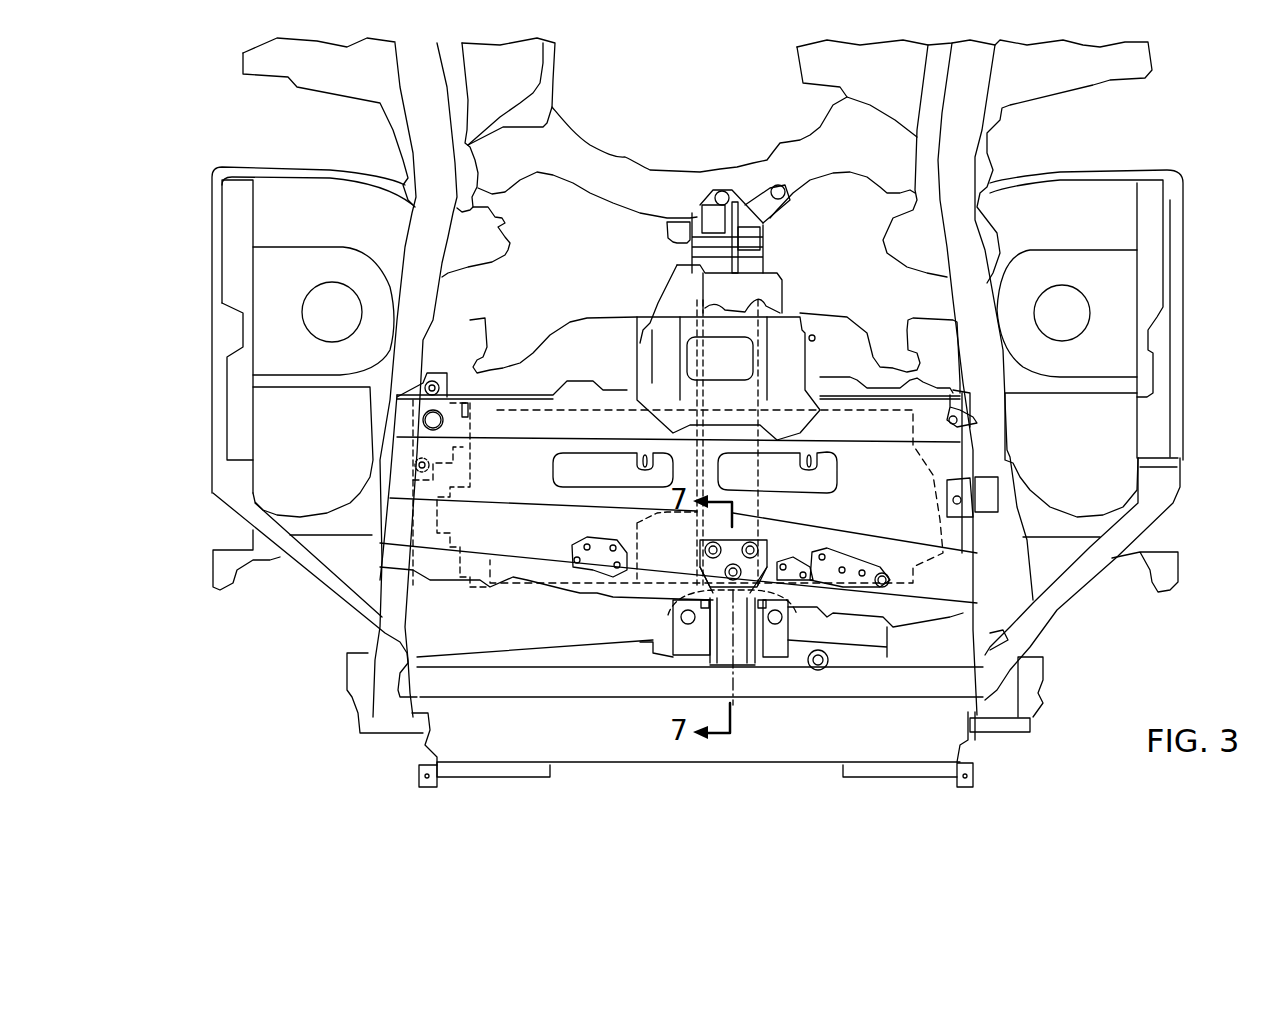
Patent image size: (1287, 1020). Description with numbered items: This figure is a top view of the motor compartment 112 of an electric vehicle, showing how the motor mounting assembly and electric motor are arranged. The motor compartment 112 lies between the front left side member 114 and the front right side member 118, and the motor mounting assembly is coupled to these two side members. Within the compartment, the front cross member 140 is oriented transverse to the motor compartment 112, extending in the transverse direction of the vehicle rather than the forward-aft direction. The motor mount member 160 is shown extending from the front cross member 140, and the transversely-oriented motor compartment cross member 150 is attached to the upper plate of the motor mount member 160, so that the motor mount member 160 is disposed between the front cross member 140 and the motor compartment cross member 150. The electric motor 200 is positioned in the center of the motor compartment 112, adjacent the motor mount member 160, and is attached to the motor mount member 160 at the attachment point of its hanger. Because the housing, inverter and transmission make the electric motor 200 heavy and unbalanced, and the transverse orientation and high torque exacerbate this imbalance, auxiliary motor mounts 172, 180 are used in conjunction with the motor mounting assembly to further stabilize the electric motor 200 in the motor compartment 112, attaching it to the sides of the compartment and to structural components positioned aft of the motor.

The motor compartment 112 is at (230, 126).
The front left side member 114 is at (1200, 310).
The front right side member 118 is at (195, 328).
The front cross member 140 is at (628, 657).
The motor compartment cross member 150 is at (840, 407).
The motor mount member 160 is at (740, 647).
The auxiliary motor mount 172 is at (440, 377).
The auxiliary motor mount 180 is at (753, 202).
The electric motor 200 is at (565, 427).